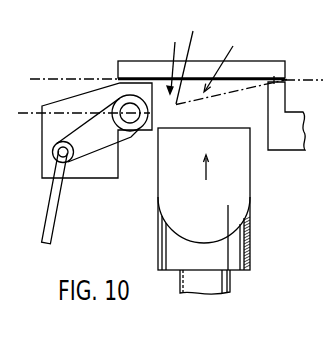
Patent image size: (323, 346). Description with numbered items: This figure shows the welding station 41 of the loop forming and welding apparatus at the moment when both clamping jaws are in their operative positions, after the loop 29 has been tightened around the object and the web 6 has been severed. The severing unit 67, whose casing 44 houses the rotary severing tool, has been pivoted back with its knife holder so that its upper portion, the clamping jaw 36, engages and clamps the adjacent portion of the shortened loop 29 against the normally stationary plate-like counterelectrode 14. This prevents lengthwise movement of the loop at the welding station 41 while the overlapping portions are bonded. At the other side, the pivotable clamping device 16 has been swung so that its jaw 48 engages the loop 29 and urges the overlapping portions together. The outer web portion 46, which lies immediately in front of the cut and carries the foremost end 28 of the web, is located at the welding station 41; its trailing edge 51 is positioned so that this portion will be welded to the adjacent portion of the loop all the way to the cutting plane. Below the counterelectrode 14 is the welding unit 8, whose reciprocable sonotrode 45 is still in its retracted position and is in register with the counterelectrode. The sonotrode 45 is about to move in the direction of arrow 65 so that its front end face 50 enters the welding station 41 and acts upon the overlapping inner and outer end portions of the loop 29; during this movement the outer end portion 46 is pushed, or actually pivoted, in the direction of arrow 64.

The web 6 is at (24, 112).
The welding unit 8 is at (225, 280).
The counterelectrode 14 is at (257, 67).
The clamping device 16 is at (287, 142).
The foremost end of the web 28 is at (308, 73).
The loop 29 is at (60, 78).
The clamping jaw 36 is at (127, 88).
The welding station 41 is at (226, 57).
The casing 44 is at (134, 136).
The sonotrode 45 is at (245, 247).
The outer web portion 46 is at (196, 99).
The jaw 48 is at (277, 78).
The front end face 50 is at (228, 130).
The trailing edge 51 is at (190, 56).
The arrow 64 is at (169, 57).
The arrow 65 is at (207, 180).
The severing unit 67 is at (90, 172).